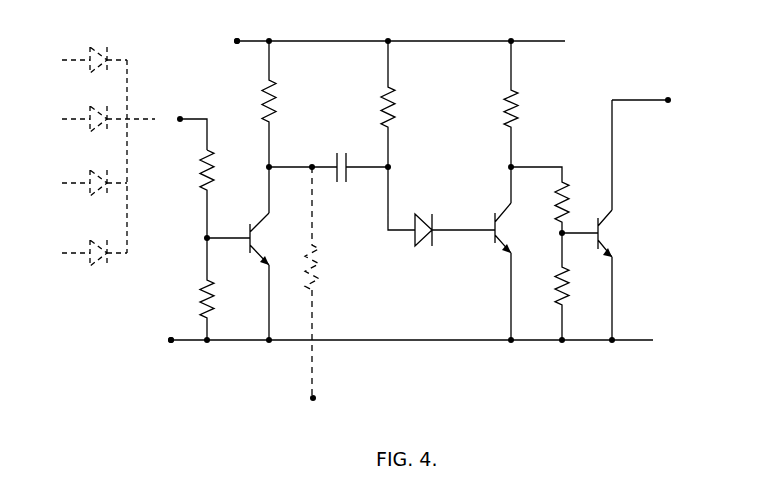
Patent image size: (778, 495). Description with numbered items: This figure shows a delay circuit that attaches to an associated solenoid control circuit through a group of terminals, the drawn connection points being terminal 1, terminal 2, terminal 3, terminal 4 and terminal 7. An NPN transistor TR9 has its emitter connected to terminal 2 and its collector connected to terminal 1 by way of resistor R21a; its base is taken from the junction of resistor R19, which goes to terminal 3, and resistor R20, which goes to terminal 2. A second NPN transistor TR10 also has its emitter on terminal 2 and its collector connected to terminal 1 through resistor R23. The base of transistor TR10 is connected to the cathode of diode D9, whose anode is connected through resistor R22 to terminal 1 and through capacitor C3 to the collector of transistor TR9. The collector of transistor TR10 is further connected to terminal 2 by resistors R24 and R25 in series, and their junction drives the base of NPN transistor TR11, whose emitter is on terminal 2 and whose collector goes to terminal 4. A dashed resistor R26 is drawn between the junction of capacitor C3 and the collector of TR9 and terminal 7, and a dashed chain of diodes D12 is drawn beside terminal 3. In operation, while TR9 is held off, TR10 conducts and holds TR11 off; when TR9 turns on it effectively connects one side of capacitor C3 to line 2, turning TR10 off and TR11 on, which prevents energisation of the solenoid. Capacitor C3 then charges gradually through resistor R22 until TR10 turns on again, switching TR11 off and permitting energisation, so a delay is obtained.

The terminal 1 is at (227, 41).
The terminal 2 is at (160, 340).
The terminal 3 is at (183, 129).
The terminal 4 is at (651, 100).
The terminal 7 is at (322, 349).
The pair of diodes D12 is at (106, 268).
The resistor R19 is at (203, 165).
The resistor R20 is at (205, 297).
The NPN transistor TR9 is at (246, 227).
The resistor R21a is at (280, 103).
The capacitor C3 is at (331, 160).
The resistor R22 is at (397, 107).
The resistor R26 is at (322, 272).
The diode D9 is at (437, 223).
The resistor R23 is at (520, 110).
The NPN transistor TR10 is at (503, 246).
The resistor R24 is at (567, 206).
The resistor R25 is at (556, 287).
The NPN transistor TR11 is at (607, 232).